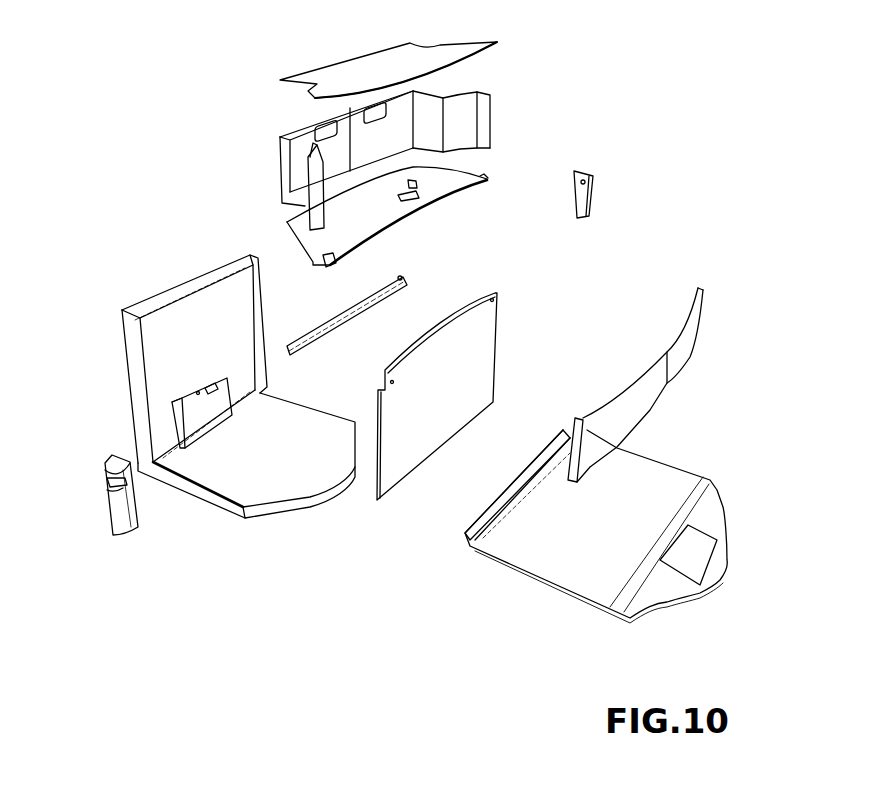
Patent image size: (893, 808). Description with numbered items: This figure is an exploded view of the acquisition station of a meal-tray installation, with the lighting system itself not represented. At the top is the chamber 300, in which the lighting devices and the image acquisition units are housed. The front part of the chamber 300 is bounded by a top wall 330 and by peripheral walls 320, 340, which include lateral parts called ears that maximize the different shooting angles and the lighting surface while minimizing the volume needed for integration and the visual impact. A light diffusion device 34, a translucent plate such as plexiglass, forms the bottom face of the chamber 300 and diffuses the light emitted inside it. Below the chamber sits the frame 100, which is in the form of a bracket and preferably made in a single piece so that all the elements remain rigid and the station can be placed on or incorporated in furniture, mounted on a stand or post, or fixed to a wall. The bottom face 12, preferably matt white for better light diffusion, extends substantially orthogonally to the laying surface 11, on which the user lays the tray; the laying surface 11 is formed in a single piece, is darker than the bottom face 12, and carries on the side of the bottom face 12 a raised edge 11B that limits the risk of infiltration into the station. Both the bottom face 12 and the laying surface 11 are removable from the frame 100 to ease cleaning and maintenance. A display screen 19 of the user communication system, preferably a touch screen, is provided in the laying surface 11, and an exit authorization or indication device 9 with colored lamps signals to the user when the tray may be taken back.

The chamber 300 is at (200, 80).
The top wall 330 is at (440, 62).
The peripheral wall 320 is at (457, 110).
The light diffusion device 34 is at (390, 210).
The exit authorization or indication device 9 is at (590, 172).
The frame 100 is at (93, 293).
The bottom face 12 is at (477, 345).
The peripheral wall 340 is at (687, 350).
The laying surface 11 is at (570, 567).
The raised edge 11B is at (473, 538).
The display screen 19 is at (700, 555).